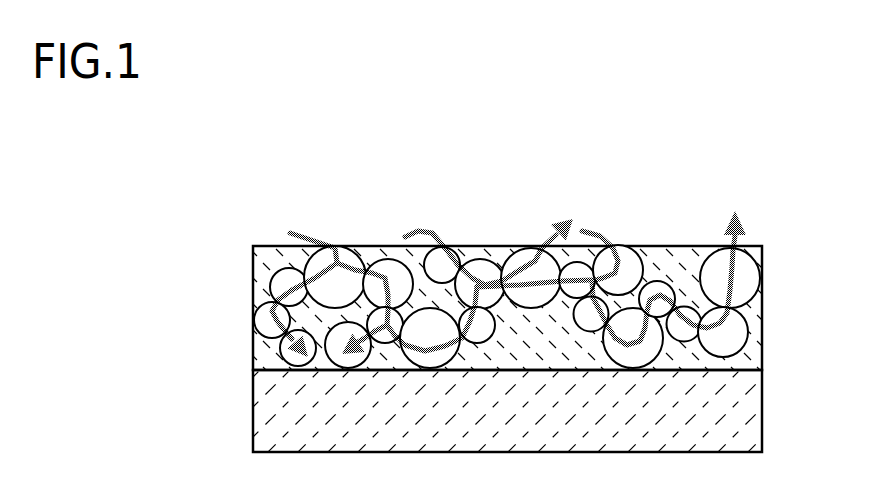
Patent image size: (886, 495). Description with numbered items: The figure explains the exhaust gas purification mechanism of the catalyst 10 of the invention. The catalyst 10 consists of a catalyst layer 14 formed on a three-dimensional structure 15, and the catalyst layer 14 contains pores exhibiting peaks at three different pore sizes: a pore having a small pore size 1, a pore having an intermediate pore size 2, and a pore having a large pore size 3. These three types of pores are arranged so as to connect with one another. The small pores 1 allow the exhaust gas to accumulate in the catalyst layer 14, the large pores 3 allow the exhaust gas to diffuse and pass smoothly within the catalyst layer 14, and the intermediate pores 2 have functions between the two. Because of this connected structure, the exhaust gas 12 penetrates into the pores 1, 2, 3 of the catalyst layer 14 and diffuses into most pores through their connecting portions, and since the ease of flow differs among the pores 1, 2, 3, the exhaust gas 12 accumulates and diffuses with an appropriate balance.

The catalyst 10 is at (280, 175).
The exhaust gas 12 is at (543, 237).
The pore having a small pore size 1 is at (662, 280).
The pore having an intermediate pore size 2 is at (641, 262).
The pore having a large pore size 3 is at (755, 282).
The catalyst layer 14 is at (755, 332).
The three-dimensional structure 15 is at (755, 403).